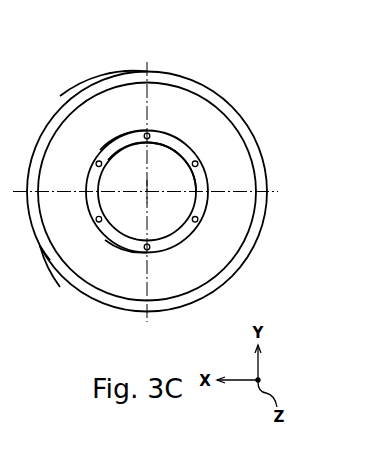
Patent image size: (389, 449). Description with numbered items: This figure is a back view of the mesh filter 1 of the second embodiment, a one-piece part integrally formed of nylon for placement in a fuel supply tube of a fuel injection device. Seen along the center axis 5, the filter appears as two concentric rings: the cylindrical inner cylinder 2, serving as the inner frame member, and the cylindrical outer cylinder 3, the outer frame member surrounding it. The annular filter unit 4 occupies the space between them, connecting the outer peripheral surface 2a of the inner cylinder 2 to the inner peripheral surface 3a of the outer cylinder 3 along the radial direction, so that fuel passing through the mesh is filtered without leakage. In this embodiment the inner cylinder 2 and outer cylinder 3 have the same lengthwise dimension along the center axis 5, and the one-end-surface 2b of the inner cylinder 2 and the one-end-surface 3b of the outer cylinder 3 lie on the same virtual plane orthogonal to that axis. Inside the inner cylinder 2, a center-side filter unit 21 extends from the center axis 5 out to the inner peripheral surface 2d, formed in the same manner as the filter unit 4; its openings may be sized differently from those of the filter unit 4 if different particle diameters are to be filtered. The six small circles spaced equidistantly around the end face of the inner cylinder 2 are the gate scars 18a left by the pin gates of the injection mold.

The mesh filter 1 is at (143, 189).
The inner cylinder 2 is at (85, 180).
The outer peripheral surface of the inner cylinder 2a is at (113, 143).
The one-end-surface of the inner cylinder 2b is at (120, 240).
The inner peripheral surface of the inner cylinder 2d is at (115, 160).
The outer cylinder 3 is at (73, 97).
The inner peripheral surface of the outer cylinder 3a is at (125, 88).
The one-end-surface of the outer cylinder 3b is at (67, 272).
The filter unit 4 is at (68, 230).
The center axis 5 is at (147, 192).
The gate scars 18a is at (149, 132).
The center-side filter unit 21 is at (166, 168).